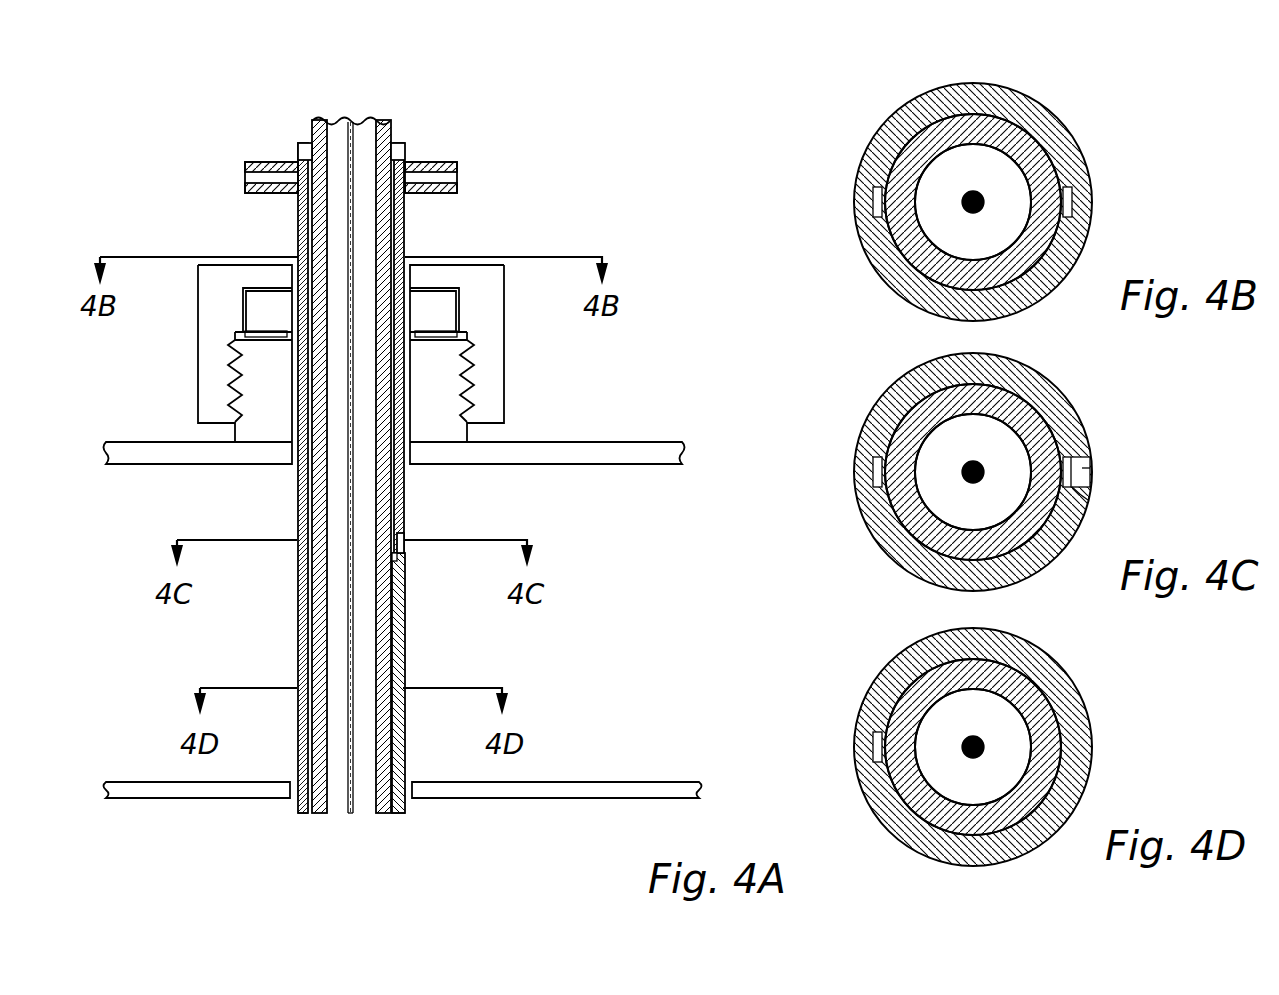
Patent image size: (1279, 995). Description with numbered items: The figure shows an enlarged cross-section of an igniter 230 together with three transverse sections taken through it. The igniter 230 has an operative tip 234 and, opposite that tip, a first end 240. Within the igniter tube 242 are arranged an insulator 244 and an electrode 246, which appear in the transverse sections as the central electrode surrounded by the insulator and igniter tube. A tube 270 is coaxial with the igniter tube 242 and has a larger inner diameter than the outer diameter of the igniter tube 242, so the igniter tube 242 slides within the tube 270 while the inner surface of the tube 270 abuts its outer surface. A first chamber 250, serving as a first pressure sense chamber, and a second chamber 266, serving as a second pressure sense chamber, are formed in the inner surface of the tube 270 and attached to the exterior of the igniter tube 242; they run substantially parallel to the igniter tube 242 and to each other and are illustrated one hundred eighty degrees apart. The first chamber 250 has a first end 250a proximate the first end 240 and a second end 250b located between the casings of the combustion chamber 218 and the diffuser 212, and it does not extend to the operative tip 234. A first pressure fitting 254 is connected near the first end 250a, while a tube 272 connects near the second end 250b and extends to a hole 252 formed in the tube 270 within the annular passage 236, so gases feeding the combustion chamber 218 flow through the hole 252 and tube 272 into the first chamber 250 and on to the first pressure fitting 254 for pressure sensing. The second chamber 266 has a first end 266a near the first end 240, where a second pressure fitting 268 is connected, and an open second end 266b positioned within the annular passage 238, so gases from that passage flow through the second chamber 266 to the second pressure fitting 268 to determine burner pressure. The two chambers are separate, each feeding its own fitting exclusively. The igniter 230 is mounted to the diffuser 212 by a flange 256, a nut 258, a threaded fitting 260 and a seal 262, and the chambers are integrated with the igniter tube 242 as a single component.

In FIG. 4A, the diffuser 212 is at (128, 428).
In FIG. 4A, the combustion chamber 218 is at (128, 768).
In FIG. 4A, the igniter 230 is at (165, 128).
In FIG. 4A, the operative tip 234 is at (345, 816).
In FIG. 4A, the annular passage 236 is at (590, 594).
In FIG. 4A, the annular passage 238 is at (548, 828).
In FIG. 4A, the first end 240 is at (363, 103).
In FIG. 4B, the igniter tube 242 is at (1040, 168).
In FIG. 4C, the igniter tube 242 is at (1000, 395).
In FIG. 4D, the igniter tube 242 is at (1005, 675).
In FIG. 4A, the insulator 244 is at (340, 488).
In FIG. 4B, the insulator 244 is at (995, 160).
In FIG. 4C, the insulator 244 is at (948, 435).
In FIG. 4D, the insulator 244 is at (963, 710).
In FIG. 4A, the electrode 246 is at (349, 135).
In FIG. 4B, the electrode 246 is at (963, 192).
In FIG. 4C, the electrode 246 is at (963, 465).
In FIG. 4D, the electrode 246 is at (960, 740).
In FIG. 4A, the first chamber 250 is at (395, 223).
In FIG. 4B, the first chamber 250 is at (1073, 200).
In FIG. 4C, the first chamber 250 is at (1082, 500).
In FIG. 4A, the first end 250a is at (397, 150).
In FIG. 4A, the second end 250b is at (402, 590).
In FIG. 4A, the hole 252 is at (408, 545).
In FIG. 4C, the hole 252 is at (1090, 465).
In FIG. 4A, the first pressure fitting 254 is at (445, 162).
In FIG. 4A, the flange 256 is at (445, 310).
In FIG. 4A, the nut 258 is at (480, 375).
In FIG. 4A, the threaded fitting 260 is at (470, 432).
In FIG. 4A, the seal 262 is at (468, 336).
In FIG. 4A, the second chamber 266 is at (405, 488).
In FIG. 4B, the second chamber 266 is at (873, 200).
In FIG. 4C, the second chamber 266 is at (873, 472).
In FIG. 4D, the second chamber 266 is at (873, 747).
In FIG. 4A, the first end 266a is at (305, 155).
In FIG. 4A, the second end 266b is at (303, 815).
In FIG. 4A, the second pressure fitting 268 is at (257, 193).
In FIG. 4B, the tube 270 is at (1060, 140).
In FIG. 4C, the tube 270 is at (1055, 410).
In FIG. 4D, the tube 270 is at (1055, 685).
In FIG. 4A, the tube 272 is at (400, 565).
In FIG. 4C, the tube 272 is at (1090, 478).